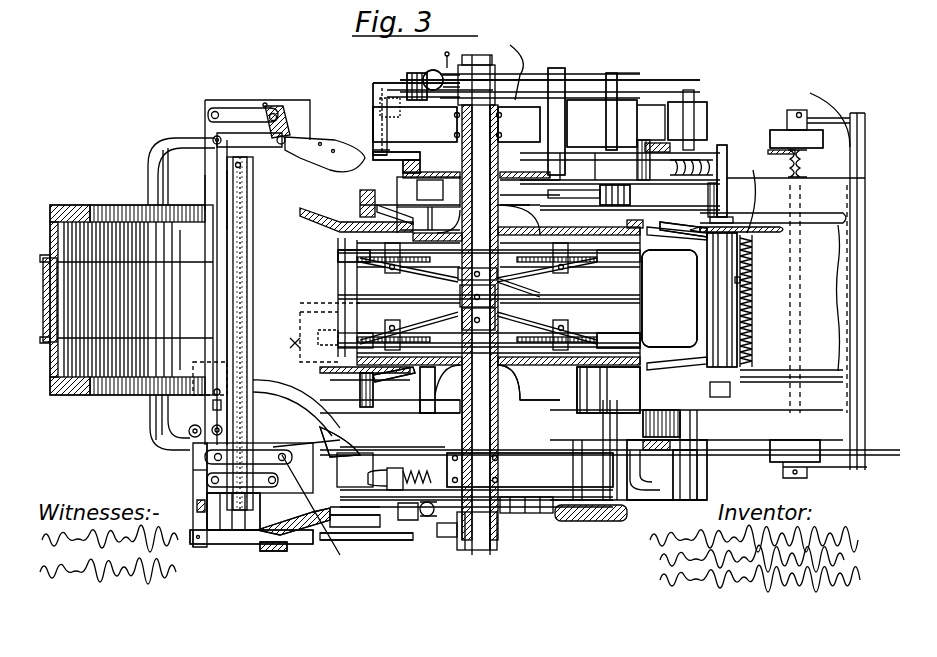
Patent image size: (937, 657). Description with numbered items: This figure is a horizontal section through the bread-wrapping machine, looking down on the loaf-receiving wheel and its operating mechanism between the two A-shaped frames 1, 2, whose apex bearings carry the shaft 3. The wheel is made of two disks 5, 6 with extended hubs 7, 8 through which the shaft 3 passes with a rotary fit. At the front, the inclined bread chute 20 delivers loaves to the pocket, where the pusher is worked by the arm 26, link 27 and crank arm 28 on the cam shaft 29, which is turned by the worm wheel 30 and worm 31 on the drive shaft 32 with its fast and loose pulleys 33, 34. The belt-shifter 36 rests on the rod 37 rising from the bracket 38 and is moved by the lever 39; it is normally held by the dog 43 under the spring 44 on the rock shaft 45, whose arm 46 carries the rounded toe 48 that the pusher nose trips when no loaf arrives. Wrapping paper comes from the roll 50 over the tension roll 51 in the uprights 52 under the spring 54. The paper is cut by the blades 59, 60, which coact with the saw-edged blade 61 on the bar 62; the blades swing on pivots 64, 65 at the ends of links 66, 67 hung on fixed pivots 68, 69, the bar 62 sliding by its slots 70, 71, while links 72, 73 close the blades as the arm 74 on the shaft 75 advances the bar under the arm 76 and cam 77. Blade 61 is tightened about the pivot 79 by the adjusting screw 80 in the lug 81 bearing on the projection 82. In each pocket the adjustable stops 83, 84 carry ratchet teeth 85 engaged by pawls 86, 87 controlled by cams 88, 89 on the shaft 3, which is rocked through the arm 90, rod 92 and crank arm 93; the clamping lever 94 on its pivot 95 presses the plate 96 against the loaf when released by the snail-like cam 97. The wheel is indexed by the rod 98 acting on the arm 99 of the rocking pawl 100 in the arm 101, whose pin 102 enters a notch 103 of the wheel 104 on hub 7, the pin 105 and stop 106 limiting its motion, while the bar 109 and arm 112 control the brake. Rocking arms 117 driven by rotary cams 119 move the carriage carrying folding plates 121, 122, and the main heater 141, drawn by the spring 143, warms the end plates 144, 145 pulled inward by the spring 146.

The A-shaped frame 1 is at (530, 470).
The A-shaped frame 2 is at (625, 115).
The shaft 3 is at (490, 398).
The disk 5 is at (492, 218).
The disk 6 is at (508, 382).
The hub 7 is at (530, 145).
The hub 8 is at (465, 432).
The bread chute 20 is at (66, 207).
The arm 26 is at (565, 75).
The link 27 is at (632, 72).
The crank arm 28 is at (610, 73).
The cam shaft 29 is at (615, 395).
The worm wheel 30 is at (585, 523).
The worm 31 is at (590, 9).
The drive shaft 32 is at (532, 8).
The fast pulley 33 is at (710, 18).
The loose pulley 34 is at (672, 14).
The belt-shifter 36 is at (390, 543).
The rod 37 is at (735, 10).
The bracket 38 is at (705, 105).
The manually operated lever 39 is at (285, 548).
The dog 43 is at (237, 545).
The spring 44 is at (262, 552).
The rock shaft 45 is at (198, 548).
The arm 46 is at (298, 345).
The rounded toe 48 is at (300, 312).
The roll 50 is at (438, 405).
The tension roll 51 is at (812, 95).
The uprights 52 is at (838, 125).
The spring 54 is at (806, 170).
The blade 59 is at (360, 445).
The blade 60 is at (342, 146).
The blade 61 is at (250, 205).
The bar 62 is at (210, 205).
The pivot 64 is at (350, 527).
The pivot 65 is at (284, 130).
The link 66 is at (262, 455).
The link 67 is at (262, 142).
The fixed pivot 68 is at (210, 480).
The fixed pivot 69 is at (212, 136).
The slot 70 is at (200, 460).
The slot 71 is at (208, 146).
The link 72 is at (240, 493).
The link 73 is at (245, 112).
The arm 74 is at (300, 395).
The shaft 75 is at (360, 385).
The arm 76 is at (430, 447).
The cam 77 is at (590, 430).
The pivot 79 is at (188, 432).
The adjusting screw 80 is at (210, 428).
The lug 81 is at (210, 405).
The projection 82 is at (180, 445).
The adjustable stop 83 is at (330, 335).
The adjustable stop 84 is at (338, 256).
The ratchet teeth 85 is at (360, 202).
The pawl 86 is at (400, 258).
The pawl 87 is at (440, 320).
The cam 88 is at (553, 260).
The cam 89 is at (530, 330).
The arm 90 is at (500, 525).
The rod 92 is at (530, 515).
The crank arm 93 is at (425, 518).
The spring actuated lever 94 is at (420, 270).
The pivot 95 is at (370, 338).
The pressure plate 96 is at (669, 298).
The snail-like cam 97 is at (520, 285).
The rod 98 is at (447, 60).
The arm 99 is at (380, 87).
The rocking pawl 100 is at (408, 170).
The arm 101 is at (373, 105).
The pin 102 is at (425, 78).
The notch 103 is at (515, 207).
The wheel 104 is at (445, 120).
The pin 105 is at (395, 160).
The stop 106 is at (417, 73).
The bar 109 is at (555, 78).
The arm 112 is at (565, 160).
The rocking arm 117 is at (688, 92).
The rotary cam 119 is at (600, 160).
The folding plate 121 is at (380, 378).
The folding plate 122 is at (302, 214).
The main heater 141 is at (750, 265).
The spring 143 is at (705, 160).
The plate 144 is at (743, 370).
The plate 145 is at (735, 220).
The spring 146 is at (753, 290).